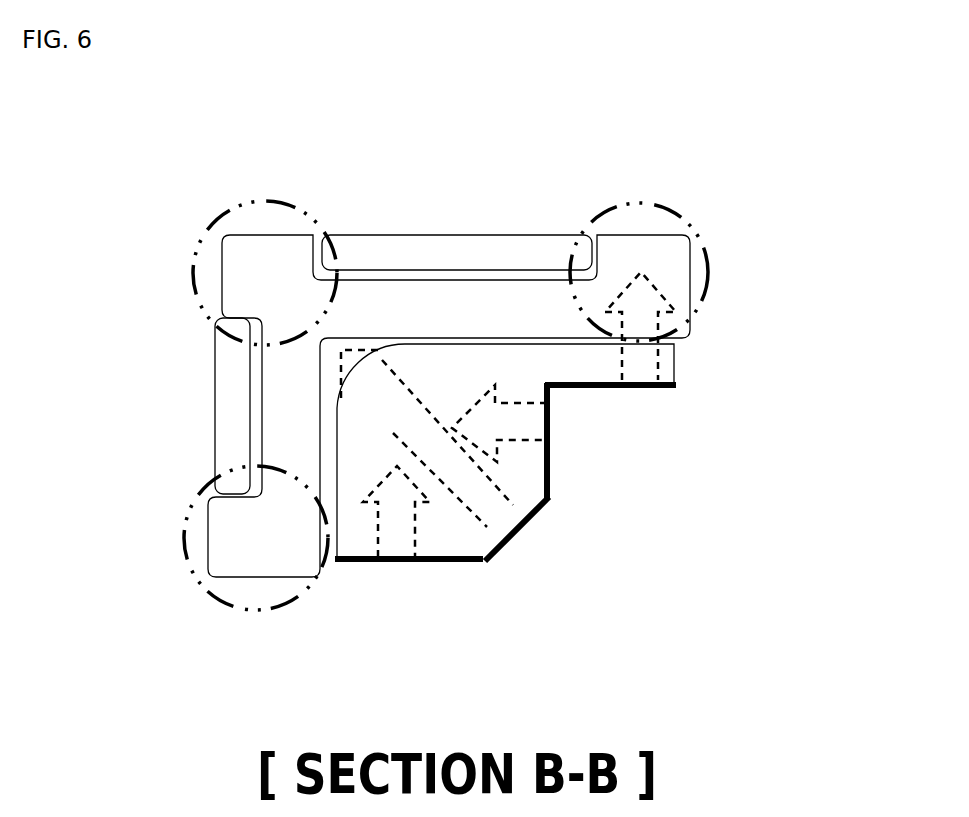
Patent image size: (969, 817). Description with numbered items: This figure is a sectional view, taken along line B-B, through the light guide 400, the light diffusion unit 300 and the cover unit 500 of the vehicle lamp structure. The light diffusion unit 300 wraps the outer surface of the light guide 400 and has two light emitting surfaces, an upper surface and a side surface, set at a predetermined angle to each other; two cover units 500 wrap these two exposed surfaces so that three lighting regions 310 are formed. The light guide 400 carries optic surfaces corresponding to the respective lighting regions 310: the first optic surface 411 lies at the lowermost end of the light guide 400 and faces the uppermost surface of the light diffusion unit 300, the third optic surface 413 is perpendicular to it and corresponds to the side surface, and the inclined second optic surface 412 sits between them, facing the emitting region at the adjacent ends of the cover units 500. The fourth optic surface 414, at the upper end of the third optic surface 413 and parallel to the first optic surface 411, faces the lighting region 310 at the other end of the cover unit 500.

The light diffusion unit 300 is at (707, 300).
The lighting region 310 is at (246, 262).
The light guide 400 is at (591, 534).
The first optic surface 411 is at (433, 563).
The second optic surface 412 is at (520, 527).
The third optic surface 413 is at (550, 463).
The fourth optic surface 414 is at (675, 385).
The cover unit 500 is at (443, 250).